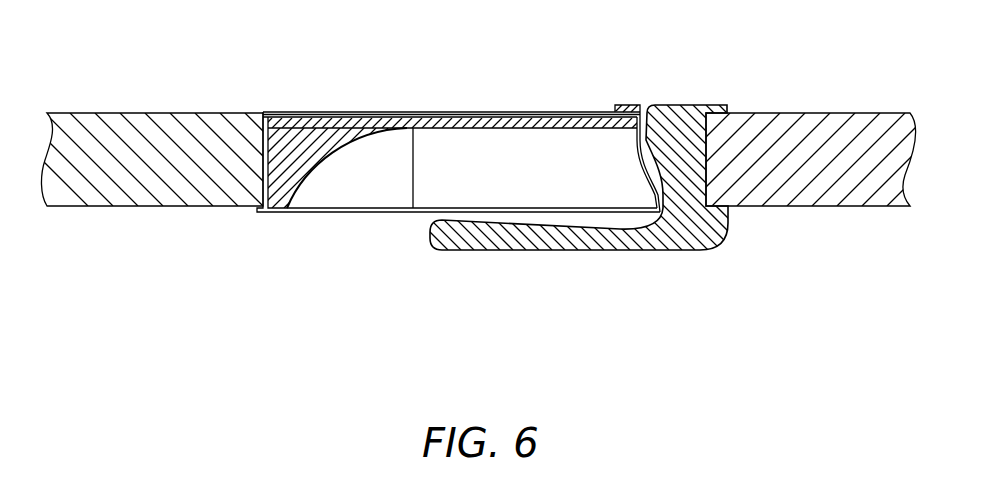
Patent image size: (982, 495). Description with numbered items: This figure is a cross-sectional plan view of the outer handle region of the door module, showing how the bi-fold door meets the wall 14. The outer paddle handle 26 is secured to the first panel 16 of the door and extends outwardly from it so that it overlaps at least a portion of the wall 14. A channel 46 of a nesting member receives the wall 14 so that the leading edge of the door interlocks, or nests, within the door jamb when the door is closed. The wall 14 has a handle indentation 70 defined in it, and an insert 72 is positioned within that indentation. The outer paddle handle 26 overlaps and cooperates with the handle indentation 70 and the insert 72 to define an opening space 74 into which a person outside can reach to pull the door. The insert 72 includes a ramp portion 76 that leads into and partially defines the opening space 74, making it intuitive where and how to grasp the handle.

The wall 14 is at (545, 112).
The first panel 16 is at (812, 122).
The outer paddle handle 26 is at (543, 250).
The channel 46 is at (706, 158).
The handle indentation 70 is at (263, 139).
The insert 72 is at (280, 198).
The opening space 74 is at (500, 181).
The ramp portion 76 is at (312, 180).